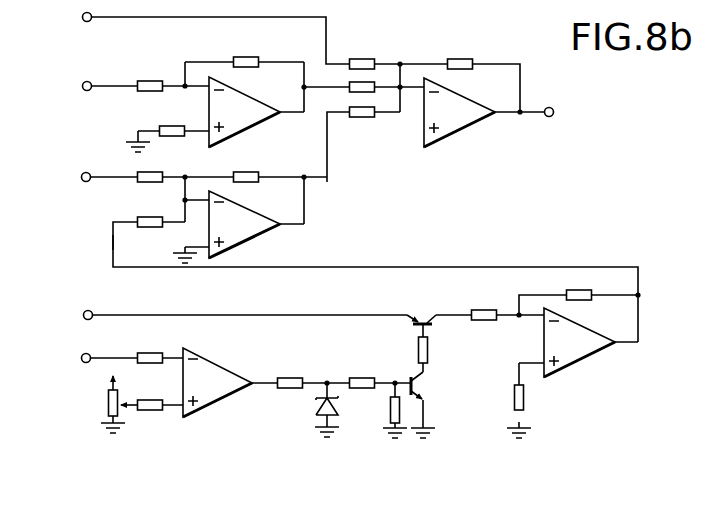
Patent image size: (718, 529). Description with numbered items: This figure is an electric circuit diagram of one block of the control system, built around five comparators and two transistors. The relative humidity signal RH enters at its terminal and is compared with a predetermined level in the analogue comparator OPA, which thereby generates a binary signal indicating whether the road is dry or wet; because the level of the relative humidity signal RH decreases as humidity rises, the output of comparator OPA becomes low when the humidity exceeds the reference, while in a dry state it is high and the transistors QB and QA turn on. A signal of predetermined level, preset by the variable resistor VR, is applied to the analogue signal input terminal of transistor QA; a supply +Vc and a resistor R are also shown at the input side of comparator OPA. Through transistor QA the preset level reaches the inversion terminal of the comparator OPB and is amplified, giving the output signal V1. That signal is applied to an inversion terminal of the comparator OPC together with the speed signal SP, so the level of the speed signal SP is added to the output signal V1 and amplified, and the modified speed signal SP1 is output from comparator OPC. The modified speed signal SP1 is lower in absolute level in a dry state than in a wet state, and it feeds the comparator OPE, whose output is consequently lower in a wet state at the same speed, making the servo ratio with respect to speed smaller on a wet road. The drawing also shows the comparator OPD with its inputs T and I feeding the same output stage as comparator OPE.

The temperature input terminal T is at (74, 18).
The current input terminal I is at (77, 87).
The speed signal SP is at (67, 177).
The modified speed signal SP1 is at (327, 182).
The output signal V1 is at (113, 243).
The variable resistor VR is at (68, 315).
The relative humidity signal RH is at (67, 359).
The supply voltage Vc is at (86, 385).
The variable resistor R is at (126, 414).
The analogue comparator OPA is at (222, 400).
The comparator OPB is at (593, 352).
The comparator OPC is at (270, 228).
The operational amplifier D OPD is at (262, 128).
The comparator OPE is at (470, 128).
The transistor QA is at (427, 327).
The transistor QB is at (427, 391).